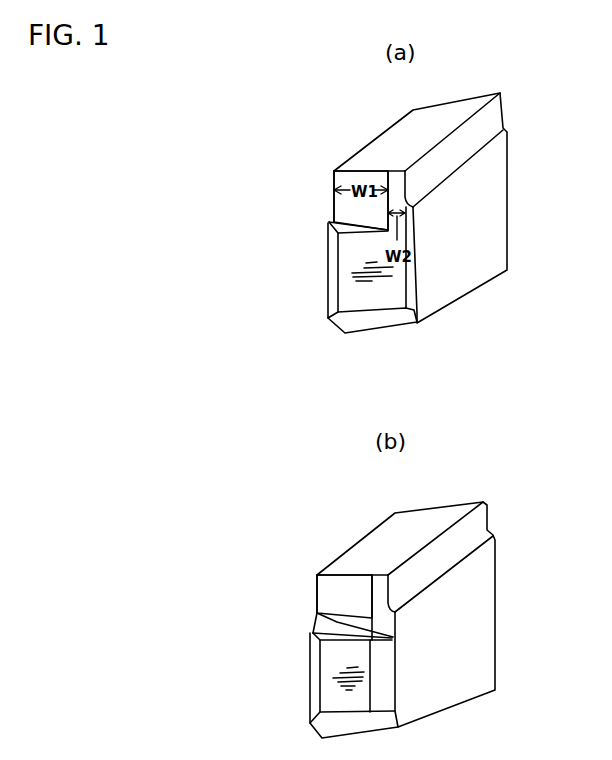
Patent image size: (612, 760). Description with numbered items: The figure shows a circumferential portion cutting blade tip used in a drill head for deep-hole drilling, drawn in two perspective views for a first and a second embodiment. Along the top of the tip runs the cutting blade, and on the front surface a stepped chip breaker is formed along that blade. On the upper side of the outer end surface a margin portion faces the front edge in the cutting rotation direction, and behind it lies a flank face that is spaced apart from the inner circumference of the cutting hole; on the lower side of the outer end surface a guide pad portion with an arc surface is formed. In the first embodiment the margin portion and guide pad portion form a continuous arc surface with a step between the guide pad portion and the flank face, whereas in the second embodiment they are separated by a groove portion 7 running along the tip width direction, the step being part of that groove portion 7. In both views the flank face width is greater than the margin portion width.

The groove portion 7 is at (333, 622).